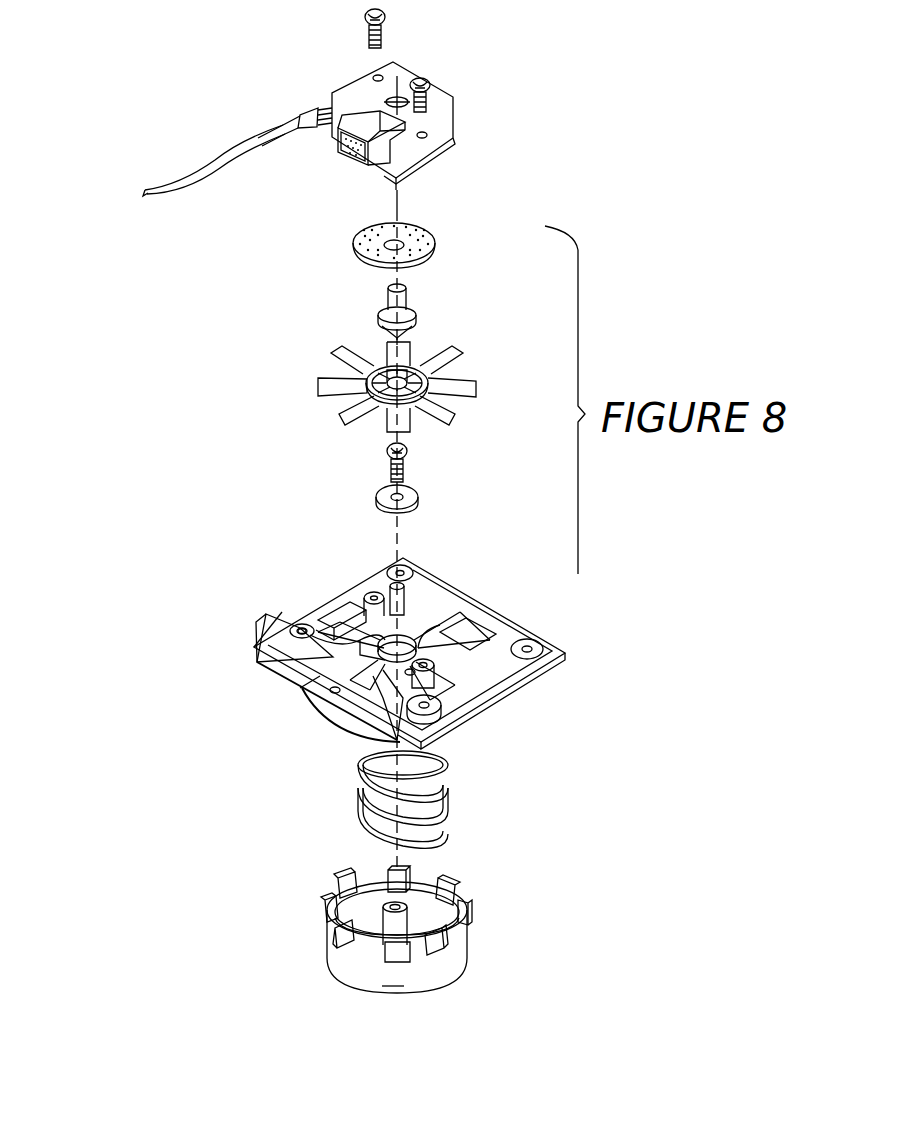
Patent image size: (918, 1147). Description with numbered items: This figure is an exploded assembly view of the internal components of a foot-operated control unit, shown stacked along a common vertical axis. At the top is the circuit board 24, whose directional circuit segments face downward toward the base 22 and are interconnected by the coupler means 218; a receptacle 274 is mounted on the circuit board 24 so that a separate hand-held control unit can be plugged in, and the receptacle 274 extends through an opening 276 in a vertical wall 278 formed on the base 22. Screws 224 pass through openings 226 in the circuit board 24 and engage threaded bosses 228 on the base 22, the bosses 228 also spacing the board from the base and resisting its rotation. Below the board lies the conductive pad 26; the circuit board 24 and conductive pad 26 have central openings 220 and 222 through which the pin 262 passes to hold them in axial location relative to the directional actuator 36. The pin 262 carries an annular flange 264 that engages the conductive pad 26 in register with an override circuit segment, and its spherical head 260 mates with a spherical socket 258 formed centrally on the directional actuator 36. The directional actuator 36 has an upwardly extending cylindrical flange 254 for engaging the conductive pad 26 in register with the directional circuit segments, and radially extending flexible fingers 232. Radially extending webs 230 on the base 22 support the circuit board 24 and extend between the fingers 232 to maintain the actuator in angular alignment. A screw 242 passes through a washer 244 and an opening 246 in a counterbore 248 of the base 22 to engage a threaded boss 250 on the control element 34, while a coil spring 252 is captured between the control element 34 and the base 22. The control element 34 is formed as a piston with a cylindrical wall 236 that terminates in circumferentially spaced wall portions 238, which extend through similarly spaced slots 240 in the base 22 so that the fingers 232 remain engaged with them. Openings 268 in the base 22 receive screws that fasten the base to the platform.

The circuit board 24 is at (420, 152).
The central opening 220 is at (395, 102).
The openings 226 is at (373, 77).
The screws 224 is at (386, 20).
The receptacle 274 is at (355, 160).
The coupler means 218 is at (275, 130).
The conductive pad 26 is at (436, 243).
The central opening 222 is at (392, 243).
The pin 262 is at (406, 299).
The annular flange 264 is at (383, 314).
The spherical head 260 is at (385, 330).
The flexible fingers 232 is at (330, 410).
The cylindrical flange 254 is at (430, 370).
The spherical socket 258 is at (405, 372).
The directional actuator 36 is at (476, 388).
The screw 242 is at (405, 462).
The washer 244 is at (418, 500).
The base 22 is at (540, 690).
The openings 268 is at (398, 568).
The opening 246 is at (405, 648).
The slots 240 is at (400, 648).
The threaded bosses 228 is at (372, 596).
The counterbore 248 is at (338, 612).
The radially extending webs 230 is at (299, 627).
The vertical wall 278 is at (288, 665).
The opening 276 is at (310, 690).
The coil spring 252 is at (358, 797).
The cylindrical wall 236 is at (458, 955).
The wall portions 238 is at (448, 892).
The threaded boss 250 is at (383, 920).
The control element 34 is at (396, 975).